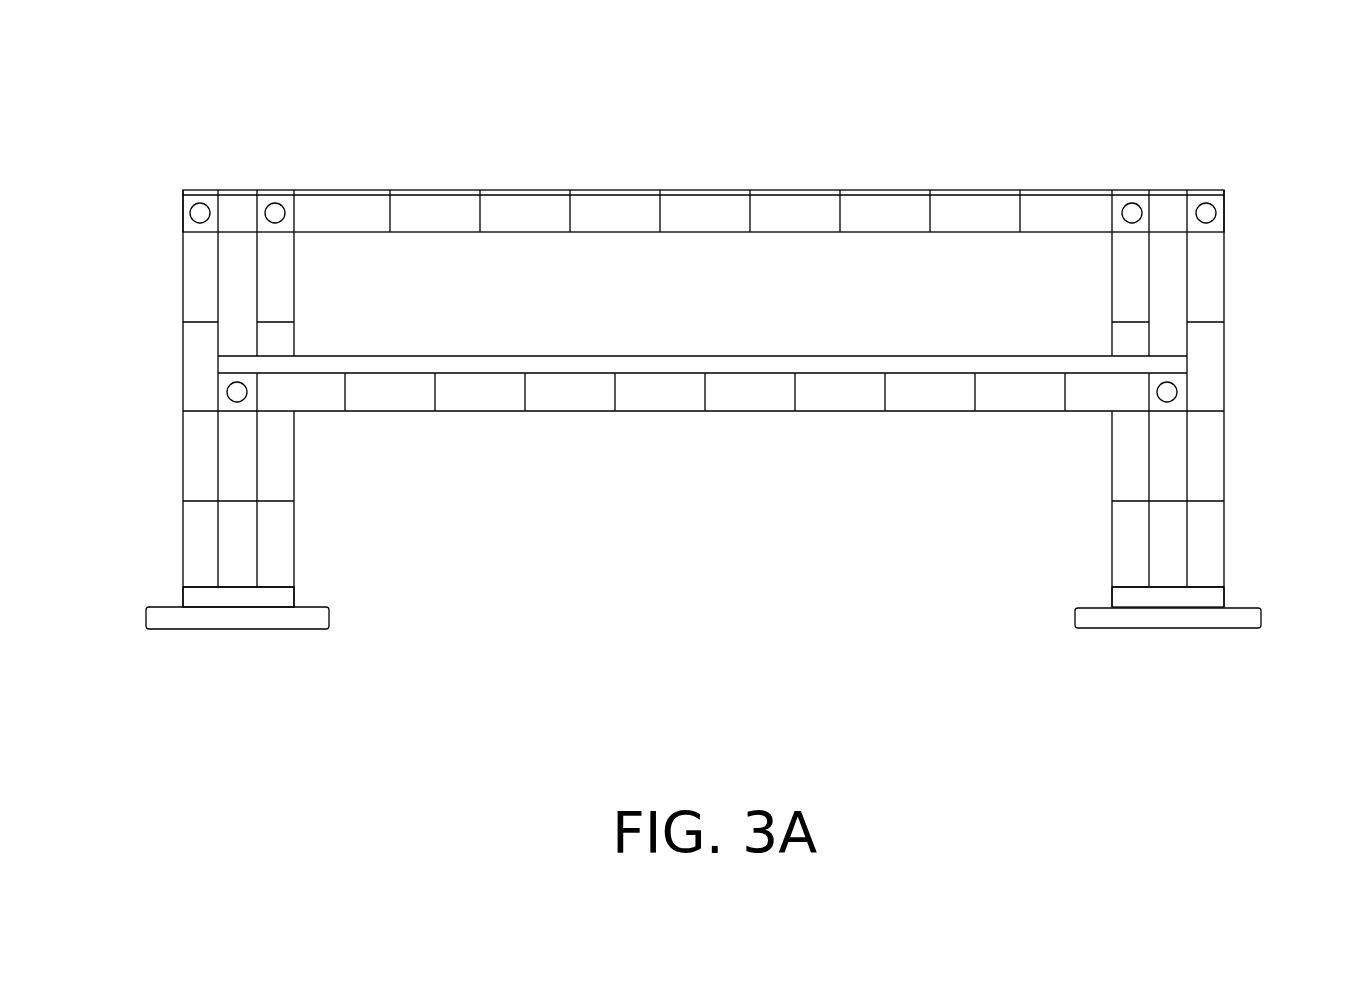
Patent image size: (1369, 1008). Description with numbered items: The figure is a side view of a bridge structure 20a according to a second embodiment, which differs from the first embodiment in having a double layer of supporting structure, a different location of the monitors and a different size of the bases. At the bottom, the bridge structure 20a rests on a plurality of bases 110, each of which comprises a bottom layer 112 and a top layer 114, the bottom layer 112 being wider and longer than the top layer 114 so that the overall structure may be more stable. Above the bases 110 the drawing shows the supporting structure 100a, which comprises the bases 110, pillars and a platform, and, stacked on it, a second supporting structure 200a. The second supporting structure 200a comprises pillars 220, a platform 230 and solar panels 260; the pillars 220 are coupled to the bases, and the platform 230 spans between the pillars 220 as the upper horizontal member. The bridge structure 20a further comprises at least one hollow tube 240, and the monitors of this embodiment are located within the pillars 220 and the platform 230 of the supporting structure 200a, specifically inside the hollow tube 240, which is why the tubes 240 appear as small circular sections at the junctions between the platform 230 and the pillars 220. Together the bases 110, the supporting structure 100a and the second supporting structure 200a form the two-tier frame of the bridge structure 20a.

The second supporting structure 200a is at (701, 420).
The platform 230 is at (703, 156).
The solar panels 260 is at (413, 215).
The supporting structure 100a is at (735, 455).
The pillars 220 is at (168, 377).
The hollow tube 240 is at (275, 206).
The bases 110 is at (703, 681).
The bottom layer 112 is at (218, 617).
The top layer 114 is at (264, 600).
The bridge structure 20a is at (1302, 740).